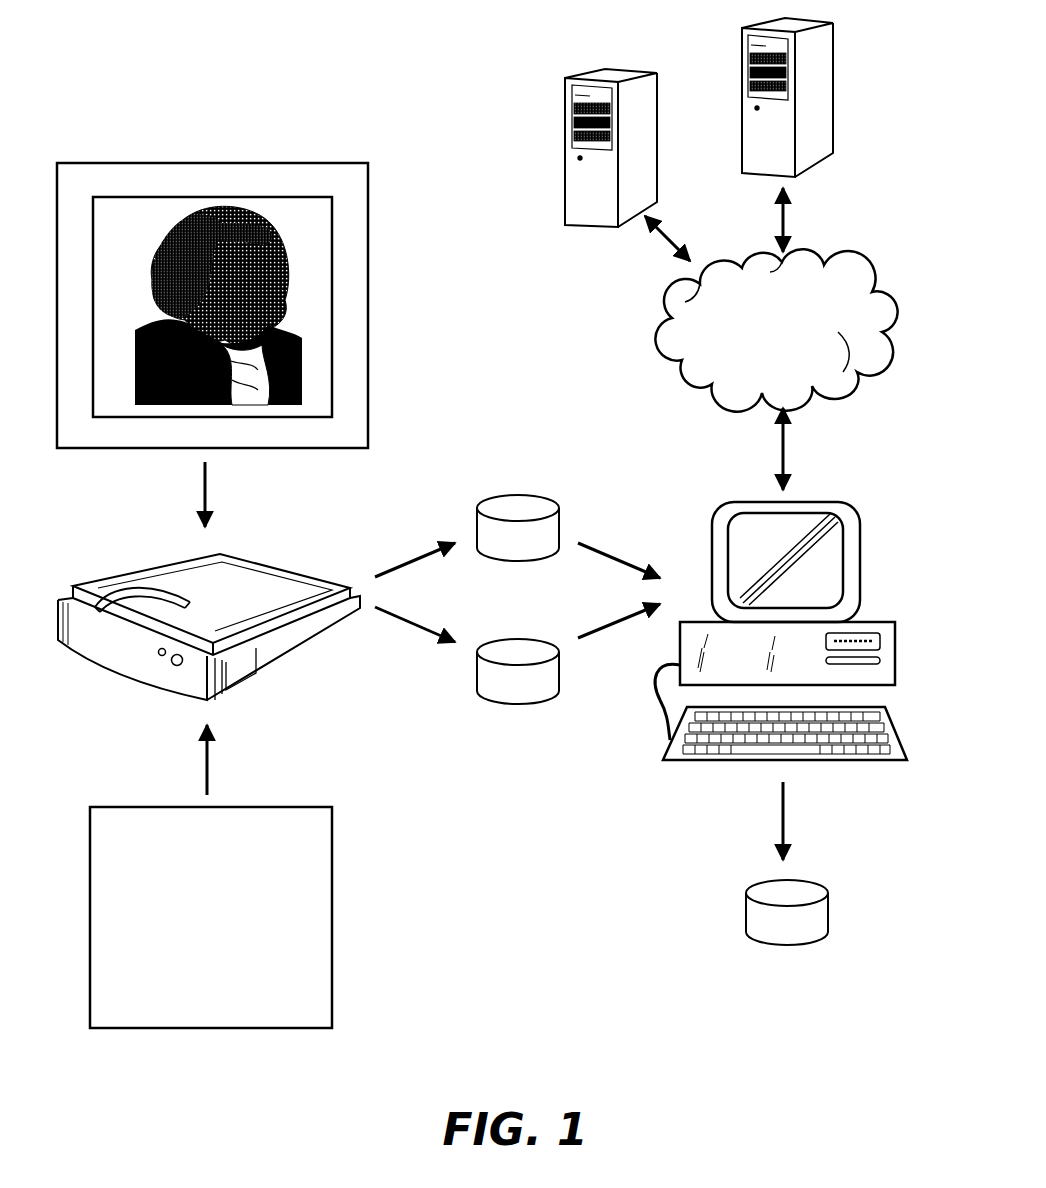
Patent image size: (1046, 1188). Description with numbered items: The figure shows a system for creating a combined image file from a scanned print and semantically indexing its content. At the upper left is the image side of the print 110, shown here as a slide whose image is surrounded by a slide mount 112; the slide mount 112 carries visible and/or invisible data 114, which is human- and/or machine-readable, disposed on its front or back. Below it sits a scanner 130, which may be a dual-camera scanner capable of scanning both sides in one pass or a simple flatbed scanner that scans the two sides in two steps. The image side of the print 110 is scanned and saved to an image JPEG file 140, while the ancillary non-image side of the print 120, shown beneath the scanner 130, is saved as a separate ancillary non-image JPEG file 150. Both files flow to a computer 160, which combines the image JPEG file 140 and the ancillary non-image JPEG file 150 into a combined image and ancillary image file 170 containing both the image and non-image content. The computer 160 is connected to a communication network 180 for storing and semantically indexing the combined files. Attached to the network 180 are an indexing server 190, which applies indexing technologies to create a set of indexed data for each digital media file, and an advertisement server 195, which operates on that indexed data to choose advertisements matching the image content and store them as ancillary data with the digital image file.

The image side of the print 110 is at (137, 217).
The slide mount 112 is at (238, 172).
The visible and/or invisible data 114 is at (357, 311).
The ancillary non-image side of the print 120 is at (144, 835).
The scanner 130 is at (135, 570).
The image JPEG file 140 is at (518, 494).
The ancillary non-image JPEG file 150 is at (533, 704).
The computer 160 is at (870, 622).
The combined image and ancillary image file 170 is at (768, 946).
The communication network 180 is at (843, 262).
The indexing server 190 is at (836, 86).
The advertisement server 195 is at (565, 145).